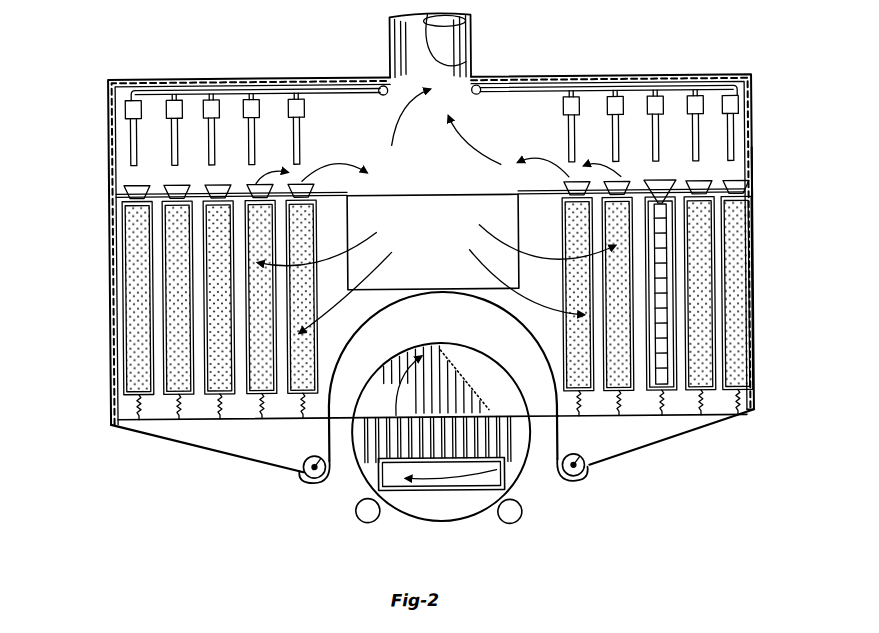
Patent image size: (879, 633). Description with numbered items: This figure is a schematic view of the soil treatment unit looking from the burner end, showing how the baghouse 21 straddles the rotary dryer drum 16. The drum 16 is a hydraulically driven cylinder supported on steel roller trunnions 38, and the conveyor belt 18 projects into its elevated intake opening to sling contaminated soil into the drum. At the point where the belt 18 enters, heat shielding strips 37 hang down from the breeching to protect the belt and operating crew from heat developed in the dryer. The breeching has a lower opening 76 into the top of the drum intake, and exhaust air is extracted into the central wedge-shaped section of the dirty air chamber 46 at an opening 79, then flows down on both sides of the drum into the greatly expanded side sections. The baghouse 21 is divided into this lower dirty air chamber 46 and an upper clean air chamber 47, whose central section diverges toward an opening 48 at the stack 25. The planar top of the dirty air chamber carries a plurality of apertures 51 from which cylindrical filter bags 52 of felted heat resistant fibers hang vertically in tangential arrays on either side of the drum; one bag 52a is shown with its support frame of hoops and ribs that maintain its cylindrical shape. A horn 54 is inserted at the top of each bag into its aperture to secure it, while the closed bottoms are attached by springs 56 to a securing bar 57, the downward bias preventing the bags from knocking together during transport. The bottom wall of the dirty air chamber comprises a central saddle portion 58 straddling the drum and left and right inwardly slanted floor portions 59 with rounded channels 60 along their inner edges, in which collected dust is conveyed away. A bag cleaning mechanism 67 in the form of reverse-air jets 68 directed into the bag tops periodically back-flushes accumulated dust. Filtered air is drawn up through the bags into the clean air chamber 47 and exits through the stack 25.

The rotary dryer drum 16 is at (433, 530).
The conveyor belt 18 is at (503, 479).
The baghouse 21 is at (97, 124).
The stack 25 is at (393, 42).
The heat shielding strips 37 is at (386, 442).
The trunnions 38 is at (373, 521).
The dirty air chamber 46 is at (752, 404).
The clean air chamber 47 is at (750, 170).
The opening 48 is at (436, 62).
The apertures 51 is at (171, 186).
The filter bags 52 is at (185, 305).
The filter bag 52a is at (652, 392).
The horn 54 is at (648, 188).
The springs 56 is at (262, 410).
The securing bar 57 is at (193, 418).
The saddle portion 58 is at (427, 292).
The slanted floor portions 59 is at (256, 462).
The rounded channels 60 is at (578, 480).
The bag cleaning mechanism 67 is at (688, 68).
The reverse-air jets 68 is at (300, 142).
The lower opening 76 is at (476, 362).
The opening 79 is at (520, 233).